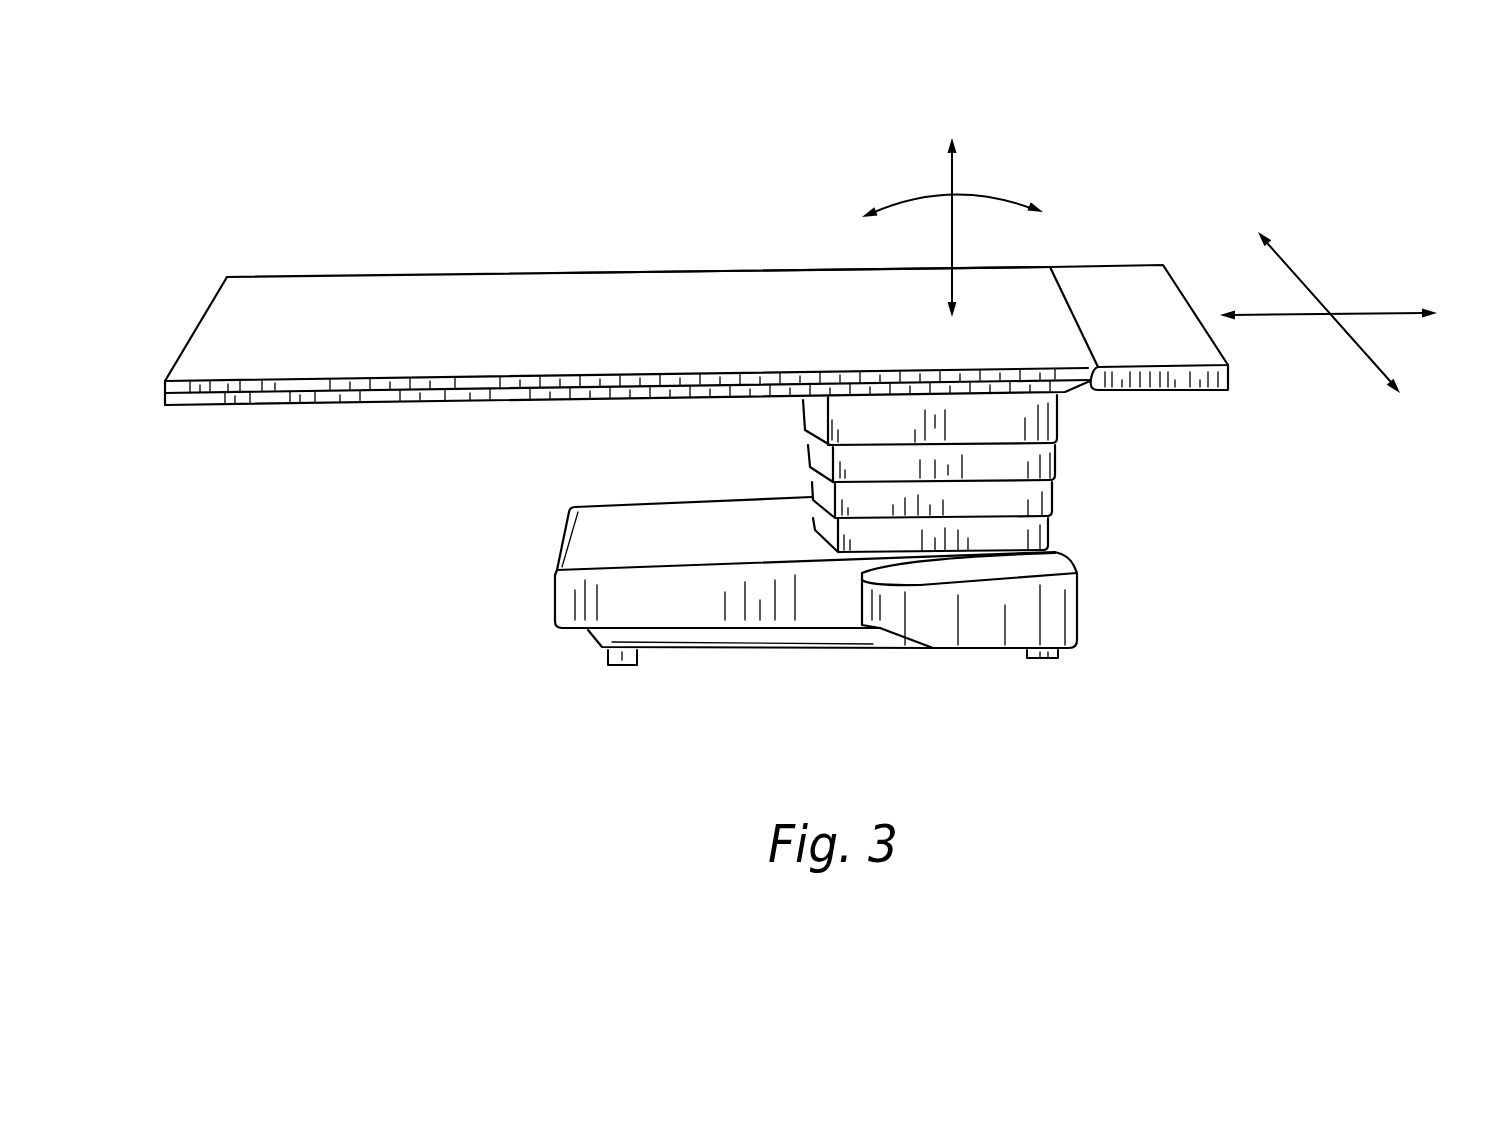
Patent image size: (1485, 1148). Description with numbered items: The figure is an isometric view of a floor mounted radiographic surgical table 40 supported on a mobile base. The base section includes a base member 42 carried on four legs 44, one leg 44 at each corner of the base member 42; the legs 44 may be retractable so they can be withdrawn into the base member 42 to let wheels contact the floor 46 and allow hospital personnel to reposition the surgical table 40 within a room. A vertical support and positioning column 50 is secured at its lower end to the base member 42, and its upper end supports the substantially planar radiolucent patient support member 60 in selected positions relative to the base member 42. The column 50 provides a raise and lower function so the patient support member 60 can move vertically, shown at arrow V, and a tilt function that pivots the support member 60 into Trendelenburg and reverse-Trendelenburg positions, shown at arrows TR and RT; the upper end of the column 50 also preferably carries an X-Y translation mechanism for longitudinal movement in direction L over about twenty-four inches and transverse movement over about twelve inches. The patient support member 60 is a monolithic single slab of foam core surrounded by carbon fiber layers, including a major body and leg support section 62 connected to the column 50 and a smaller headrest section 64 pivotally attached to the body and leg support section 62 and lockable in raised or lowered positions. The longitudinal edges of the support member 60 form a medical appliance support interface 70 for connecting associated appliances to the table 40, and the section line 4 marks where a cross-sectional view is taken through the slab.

The section line 4- 4 is at (443, 462).
The surgical table 40 is at (265, 555).
The base member 42 is at (1110, 595).
The legs 44 is at (618, 667).
The floor 46 is at (888, 707).
The vertical support and positioning column 50 is at (1082, 479).
The radiolucent patient support member 60 is at (355, 298).
The body and leg support section 62 is at (653, 307).
The headrest section 64 is at (1135, 308).
The medical appliance support interface 70 is at (232, 368).